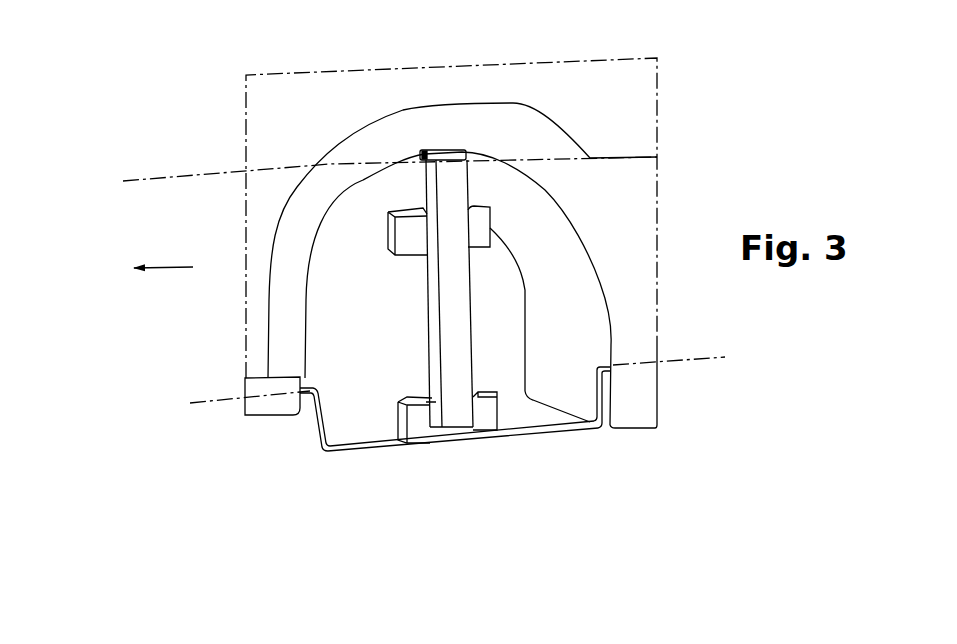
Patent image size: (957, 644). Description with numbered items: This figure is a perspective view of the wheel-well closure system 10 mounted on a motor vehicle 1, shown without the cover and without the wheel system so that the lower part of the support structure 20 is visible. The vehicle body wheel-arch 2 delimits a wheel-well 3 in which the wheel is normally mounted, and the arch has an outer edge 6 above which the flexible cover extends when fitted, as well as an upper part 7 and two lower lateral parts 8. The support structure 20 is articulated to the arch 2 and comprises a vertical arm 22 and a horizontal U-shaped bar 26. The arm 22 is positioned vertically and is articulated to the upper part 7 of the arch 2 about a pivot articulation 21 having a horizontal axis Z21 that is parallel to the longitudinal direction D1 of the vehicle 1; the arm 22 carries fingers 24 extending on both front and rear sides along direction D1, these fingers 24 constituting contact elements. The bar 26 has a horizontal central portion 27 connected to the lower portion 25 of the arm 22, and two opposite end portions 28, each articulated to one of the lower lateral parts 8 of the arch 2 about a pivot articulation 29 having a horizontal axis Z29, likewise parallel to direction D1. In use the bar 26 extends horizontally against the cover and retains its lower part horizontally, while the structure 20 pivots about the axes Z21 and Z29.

The motor vehicle 1 is at (190, 78).
The vehicle body wheel-arch 2 is at (395, 127).
The wheel-well 3 is at (536, 215).
The outer edge 6 is at (503, 160).
The upper part 7 is at (432, 130).
The pivot articulation 21 is at (460, 135).
The vertical arm 22 is at (447, 322).
The fingers 24 is at (405, 232).
The lower portion 25 is at (456, 416).
The horizontal U-shaped bar 26 is at (310, 452).
The horizontal central portion 27 is at (550, 430).
The end portions 28 is at (312, 388).
The pivot articulation 29 is at (275, 412).
The lower lateral parts 8 is at (228, 353).
The wheel-well closure system 10 is at (556, 515).
The support structure 20 is at (437, 523).
The horizontal axis Z21 is at (368, 176).
The horizontal axis Z29 is at (458, 381).
The longitudinal direction D1 is at (163, 251).